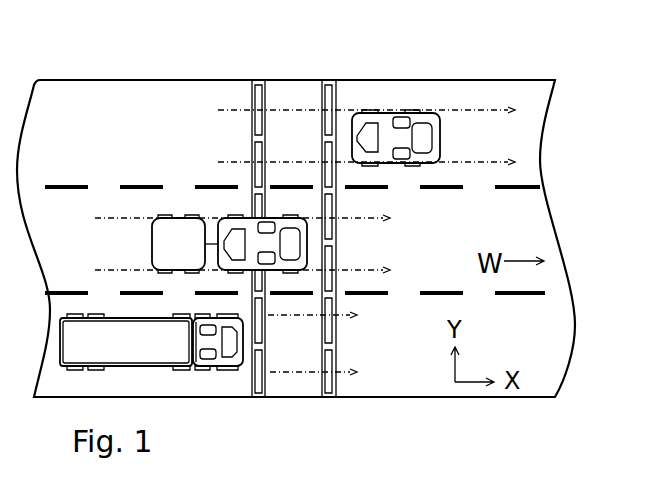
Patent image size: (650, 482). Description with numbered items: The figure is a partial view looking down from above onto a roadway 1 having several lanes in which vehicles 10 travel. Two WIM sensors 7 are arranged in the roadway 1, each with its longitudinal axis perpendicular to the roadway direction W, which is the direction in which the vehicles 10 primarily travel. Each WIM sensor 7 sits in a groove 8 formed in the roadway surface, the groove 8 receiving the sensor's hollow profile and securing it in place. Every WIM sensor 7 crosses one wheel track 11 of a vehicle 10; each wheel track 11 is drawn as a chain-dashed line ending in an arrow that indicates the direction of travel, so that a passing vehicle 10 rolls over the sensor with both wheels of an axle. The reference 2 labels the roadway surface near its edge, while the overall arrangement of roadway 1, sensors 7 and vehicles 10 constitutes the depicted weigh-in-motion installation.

The roadway 1 is at (296, 231).
The road / roadway 2 is at (426, 382).
The WIM sensor 7 is at (252, 88).
The groove 8 is at (268, 100).
The vehicle 10 is at (257, 230).
The wheel track 11 is at (262, 437).